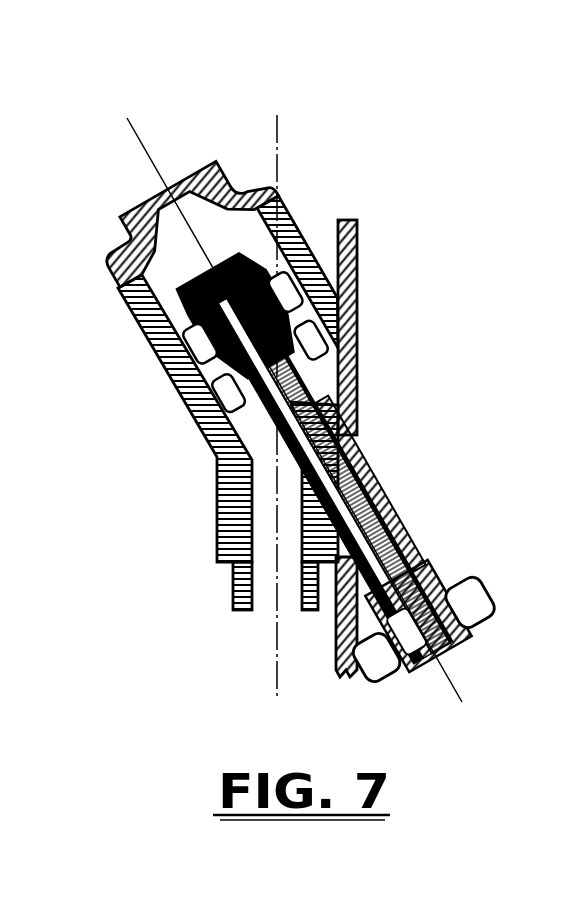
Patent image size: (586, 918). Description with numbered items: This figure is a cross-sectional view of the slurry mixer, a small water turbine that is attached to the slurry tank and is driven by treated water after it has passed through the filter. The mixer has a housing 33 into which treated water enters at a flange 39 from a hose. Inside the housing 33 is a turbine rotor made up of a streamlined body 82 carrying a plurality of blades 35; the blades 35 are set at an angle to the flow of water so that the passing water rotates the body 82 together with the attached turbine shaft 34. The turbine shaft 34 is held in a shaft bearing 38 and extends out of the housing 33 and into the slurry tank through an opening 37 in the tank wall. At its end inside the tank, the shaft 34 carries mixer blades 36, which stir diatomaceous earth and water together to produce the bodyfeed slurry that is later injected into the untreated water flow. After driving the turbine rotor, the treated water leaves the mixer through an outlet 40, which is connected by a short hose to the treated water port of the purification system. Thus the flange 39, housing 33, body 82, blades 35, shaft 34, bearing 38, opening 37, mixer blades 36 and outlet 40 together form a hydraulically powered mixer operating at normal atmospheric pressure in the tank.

The housing 33 is at (350, 331).
The turbine shaft 34 is at (474, 601).
The blades 35 is at (381, 337).
The mixer blades 36 is at (466, 630).
The opening 37 is at (449, 471).
The shaft bearing 38 is at (378, 460).
The flange 39 is at (336, 168).
The outlet 40 is at (199, 589).
The streamlined body 82 is at (413, 416).